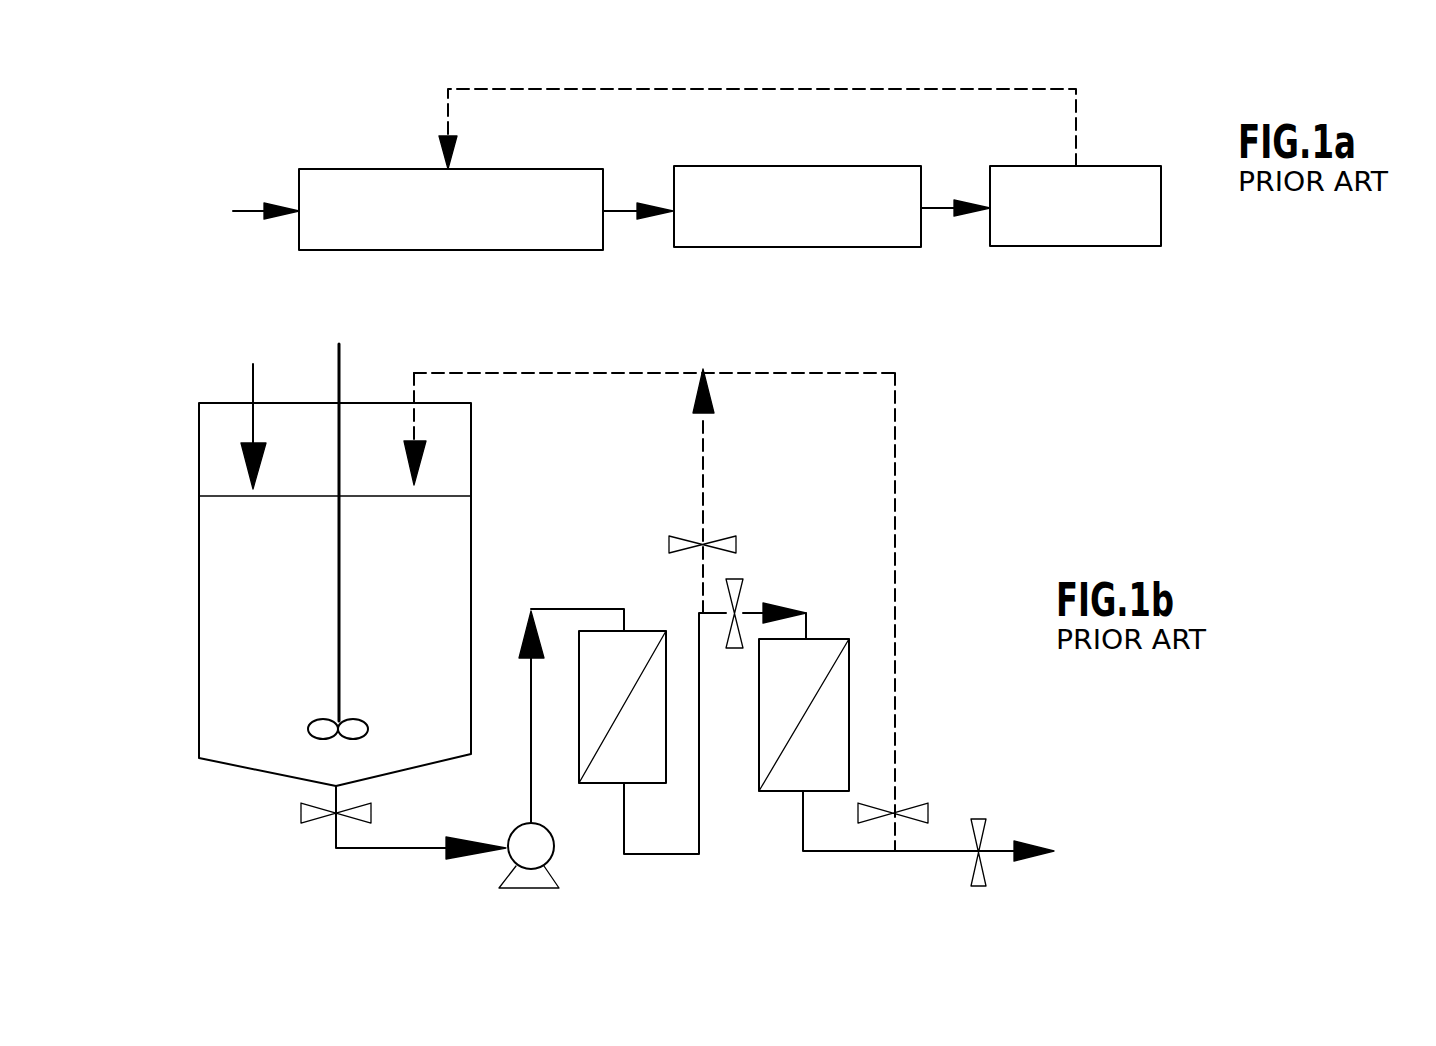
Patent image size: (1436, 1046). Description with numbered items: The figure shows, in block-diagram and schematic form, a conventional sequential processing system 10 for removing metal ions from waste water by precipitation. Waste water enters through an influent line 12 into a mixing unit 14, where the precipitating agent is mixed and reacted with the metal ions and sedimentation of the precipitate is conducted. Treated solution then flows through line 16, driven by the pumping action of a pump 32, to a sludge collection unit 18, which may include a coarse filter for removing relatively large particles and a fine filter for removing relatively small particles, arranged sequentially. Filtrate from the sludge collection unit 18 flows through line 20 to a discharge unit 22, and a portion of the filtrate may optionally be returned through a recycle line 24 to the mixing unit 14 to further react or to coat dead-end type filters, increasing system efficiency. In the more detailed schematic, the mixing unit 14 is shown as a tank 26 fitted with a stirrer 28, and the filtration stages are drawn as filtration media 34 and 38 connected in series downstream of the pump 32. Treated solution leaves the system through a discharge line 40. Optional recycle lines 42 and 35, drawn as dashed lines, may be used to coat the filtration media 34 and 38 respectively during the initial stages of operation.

In FIG. 1a, the processing system 10 is at (859, 32).
In FIG. 1a, the influent line 12 is at (265, 234).
In FIG. 1b, the influent line 12 is at (270, 419).
In FIG. 1a, the mixing unit 14 is at (451, 232).
In FIG. 1a, the line 16 is at (638, 249).
In FIG. 1b, the line 16 is at (403, 852).
In FIG. 1a, the sludge collection unit 18 is at (797, 229).
In FIG. 1a, the line 20 is at (955, 246).
In FIG. 1a, the discharge unit 22 is at (1075, 229).
In FIG. 1a, the recycle line 24 is at (764, 102).
In FIG. 1b, the tank 26 is at (301, 594).
In FIG. 1b, the stirrer 28 is at (350, 541).
In FIG. 1b, the pump 32 is at (561, 763).
In FIG. 1b, the filtration media 34 is at (692, 704).
In FIG. 1b, the recycle line 35 is at (650, 491).
In FIG. 1b, the filtration media 38 is at (804, 671).
In FIG. 1b, the discharge line 40 is at (928, 853).
In FIG. 1b, the recycle line 42 is at (917, 612).